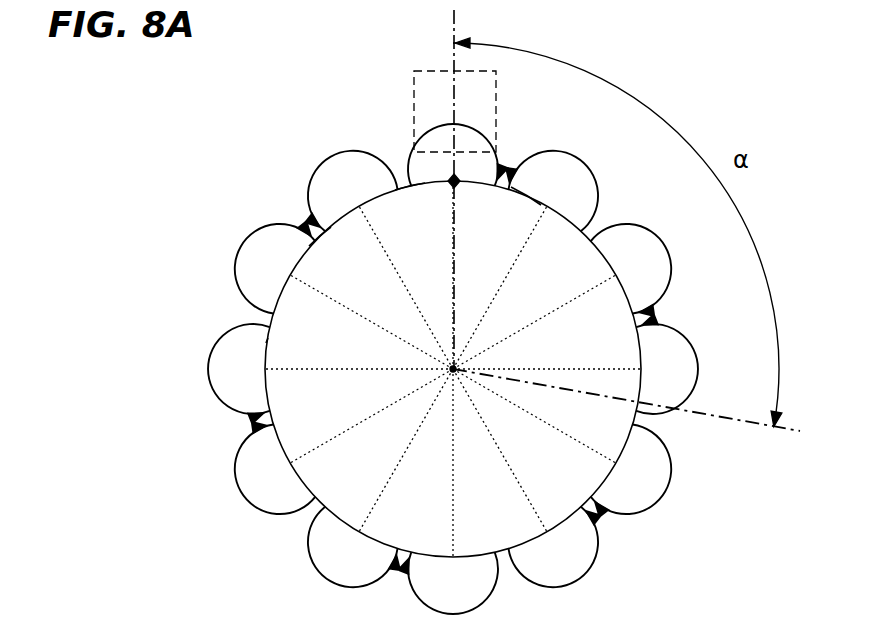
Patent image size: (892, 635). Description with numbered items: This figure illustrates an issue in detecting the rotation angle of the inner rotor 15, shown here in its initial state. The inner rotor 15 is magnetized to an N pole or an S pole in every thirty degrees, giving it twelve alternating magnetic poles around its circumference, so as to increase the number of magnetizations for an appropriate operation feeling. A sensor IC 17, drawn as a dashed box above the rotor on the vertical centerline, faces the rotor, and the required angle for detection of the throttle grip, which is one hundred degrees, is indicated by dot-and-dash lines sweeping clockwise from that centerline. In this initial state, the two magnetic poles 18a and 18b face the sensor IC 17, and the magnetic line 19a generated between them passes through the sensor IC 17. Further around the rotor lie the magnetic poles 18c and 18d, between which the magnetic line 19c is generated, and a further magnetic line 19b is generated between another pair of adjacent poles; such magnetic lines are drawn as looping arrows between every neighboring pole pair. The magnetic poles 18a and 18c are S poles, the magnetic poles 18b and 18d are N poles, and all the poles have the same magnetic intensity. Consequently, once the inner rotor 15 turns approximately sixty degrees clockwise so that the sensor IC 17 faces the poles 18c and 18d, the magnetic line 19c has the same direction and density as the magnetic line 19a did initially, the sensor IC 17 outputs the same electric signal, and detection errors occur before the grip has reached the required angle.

The inner rotor 15 is at (632, 442).
The sensor IC 17 is at (414, 76).
The magnetic pole 18a is at (526, 203).
The magnetic pole 18b is at (408, 183).
The magnetic pole 18c is at (320, 240).
The magnetic pole 18d is at (281, 323).
The magnetic line 19a is at (484, 128).
The magnetic line 19b is at (336, 155).
The magnetic line 19c is at (242, 250).